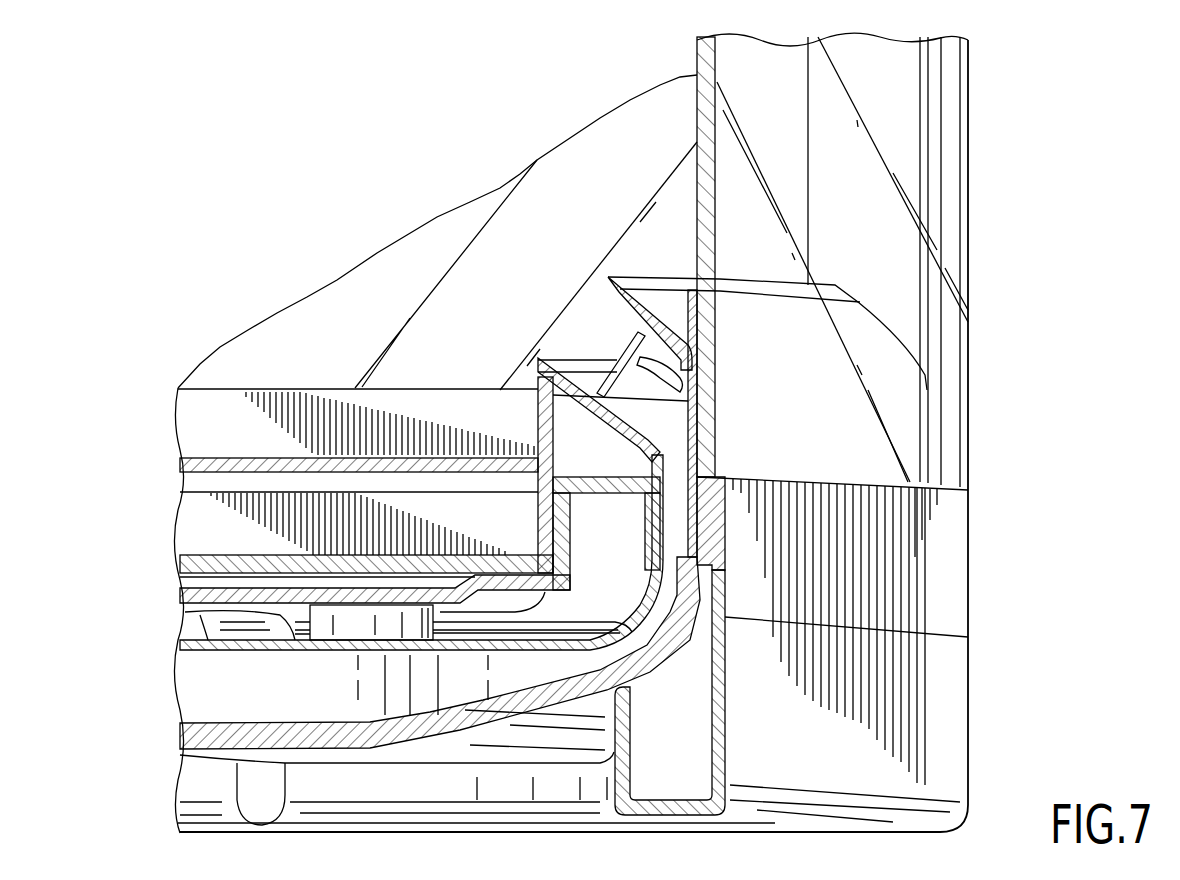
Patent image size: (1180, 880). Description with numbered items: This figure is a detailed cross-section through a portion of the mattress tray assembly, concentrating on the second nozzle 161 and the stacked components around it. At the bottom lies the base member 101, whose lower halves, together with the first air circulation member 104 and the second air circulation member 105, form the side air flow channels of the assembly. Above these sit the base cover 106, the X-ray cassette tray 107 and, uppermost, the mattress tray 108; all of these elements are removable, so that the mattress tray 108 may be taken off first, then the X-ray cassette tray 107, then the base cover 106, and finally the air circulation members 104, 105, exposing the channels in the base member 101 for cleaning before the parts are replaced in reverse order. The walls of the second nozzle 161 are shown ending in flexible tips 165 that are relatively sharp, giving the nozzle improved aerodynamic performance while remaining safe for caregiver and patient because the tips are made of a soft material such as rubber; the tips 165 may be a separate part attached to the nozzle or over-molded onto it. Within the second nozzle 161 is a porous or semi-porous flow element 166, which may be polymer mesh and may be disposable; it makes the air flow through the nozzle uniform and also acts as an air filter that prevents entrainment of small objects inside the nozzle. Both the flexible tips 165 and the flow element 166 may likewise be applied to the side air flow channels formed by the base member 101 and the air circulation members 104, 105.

The base member 101 is at (700, 806).
The first air circulation member 104 is at (180, 727).
The second air circulation member 105 is at (180, 646).
The base cover 106 is at (717, 518).
The X-ray cassette tray 107 is at (180, 563).
The mattress tray 108 is at (180, 463).
The second nozzle 161 is at (587, 293).
The flexible tips 165 is at (608, 275).
The flow element 166 is at (617, 362).